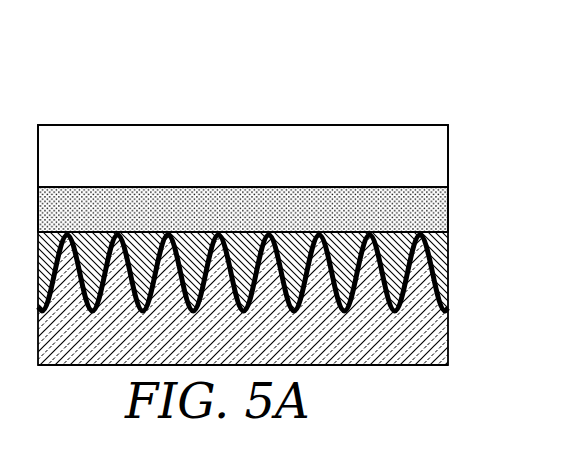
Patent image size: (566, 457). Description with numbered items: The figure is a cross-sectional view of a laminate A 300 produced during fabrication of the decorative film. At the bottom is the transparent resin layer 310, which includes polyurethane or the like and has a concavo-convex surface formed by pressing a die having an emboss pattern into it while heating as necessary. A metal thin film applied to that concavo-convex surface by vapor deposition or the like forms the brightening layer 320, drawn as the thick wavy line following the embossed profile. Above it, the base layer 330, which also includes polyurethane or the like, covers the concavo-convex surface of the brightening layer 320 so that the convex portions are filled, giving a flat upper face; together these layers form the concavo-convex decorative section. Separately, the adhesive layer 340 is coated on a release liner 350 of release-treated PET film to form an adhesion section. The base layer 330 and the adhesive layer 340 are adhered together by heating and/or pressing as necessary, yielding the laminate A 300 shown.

The laminate A 300 is at (359, 110).
The transparent resin layer 310 is at (420, 333).
The brightening layer 320 is at (438, 268).
The base layer 330 is at (446, 240).
The adhesive layer 340 is at (438, 208).
The release liner 350 is at (437, 160).